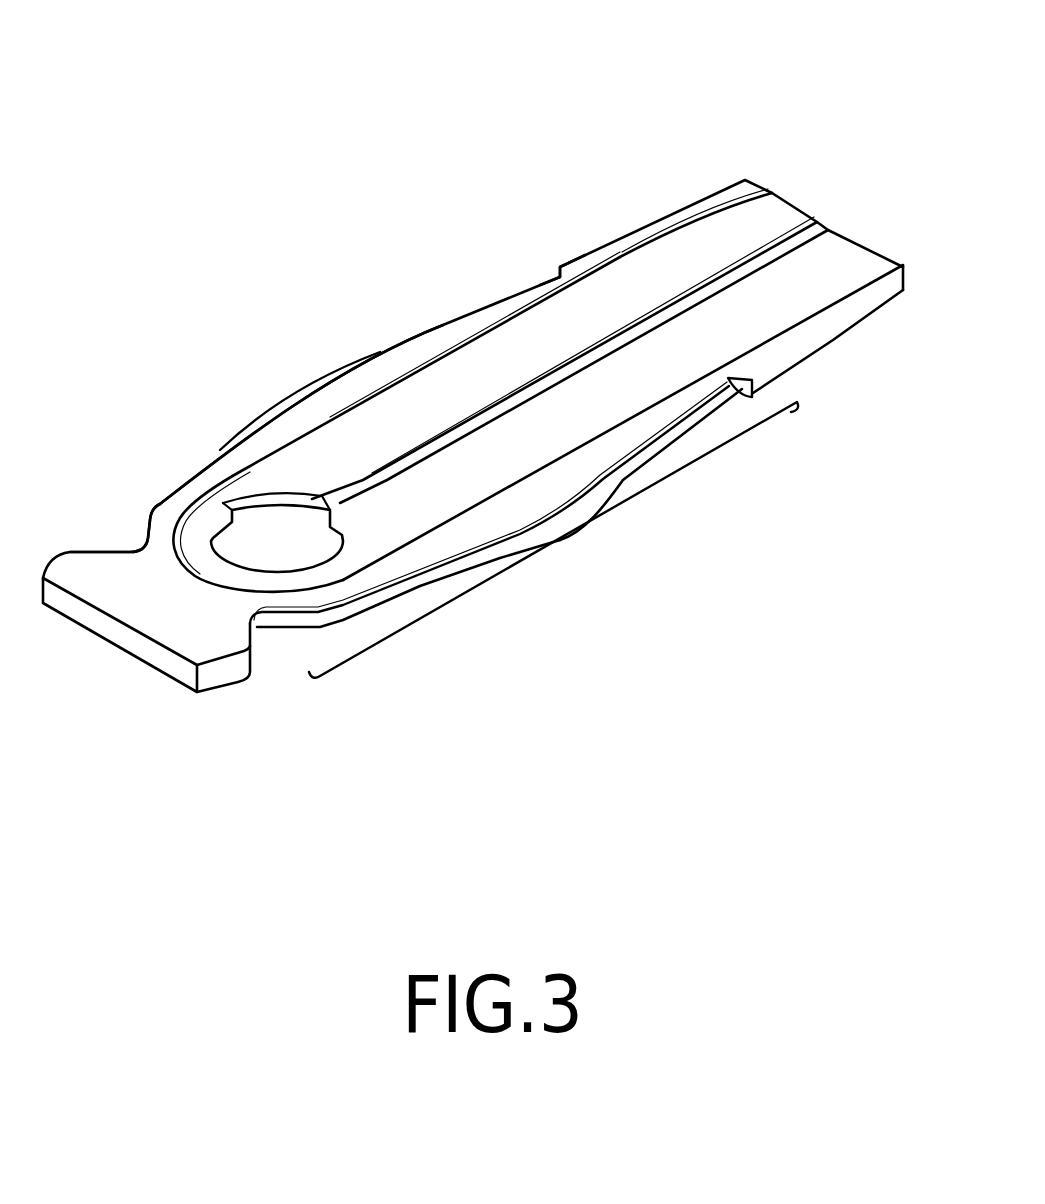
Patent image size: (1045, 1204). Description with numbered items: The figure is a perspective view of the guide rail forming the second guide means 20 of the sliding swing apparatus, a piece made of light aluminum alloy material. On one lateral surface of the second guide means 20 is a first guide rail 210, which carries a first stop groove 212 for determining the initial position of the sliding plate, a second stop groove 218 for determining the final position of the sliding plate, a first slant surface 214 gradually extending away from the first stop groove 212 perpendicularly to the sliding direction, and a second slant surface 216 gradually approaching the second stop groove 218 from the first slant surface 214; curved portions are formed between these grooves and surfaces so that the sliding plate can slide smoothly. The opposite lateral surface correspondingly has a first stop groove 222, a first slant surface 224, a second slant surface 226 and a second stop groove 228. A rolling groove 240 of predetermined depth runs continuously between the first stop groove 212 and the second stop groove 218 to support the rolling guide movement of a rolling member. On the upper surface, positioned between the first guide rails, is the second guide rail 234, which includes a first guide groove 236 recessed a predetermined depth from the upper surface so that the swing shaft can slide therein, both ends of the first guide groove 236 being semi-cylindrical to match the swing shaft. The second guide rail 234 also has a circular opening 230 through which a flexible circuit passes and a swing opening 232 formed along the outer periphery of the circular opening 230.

The second guide means 20 is at (194, 338).
The first guide rail 210 is at (563, 537).
The first stop groove 212 is at (753, 399).
The first slant surface 214 is at (633, 457).
The second slant surface 216 is at (486, 544).
The second stop groove 218 is at (260, 628).
The first stop groove 222 is at (560, 267).
The first slant surface 224 is at (443, 327).
The second slant surface 226 is at (222, 448).
The second stop groove 228 is at (148, 541).
The circular opening 230 is at (273, 523).
The swing opening 232 is at (303, 497).
The second guide rail 234 is at (668, 230).
The first guide groove 236 is at (776, 228).
The rolling groove 240 is at (414, 586).